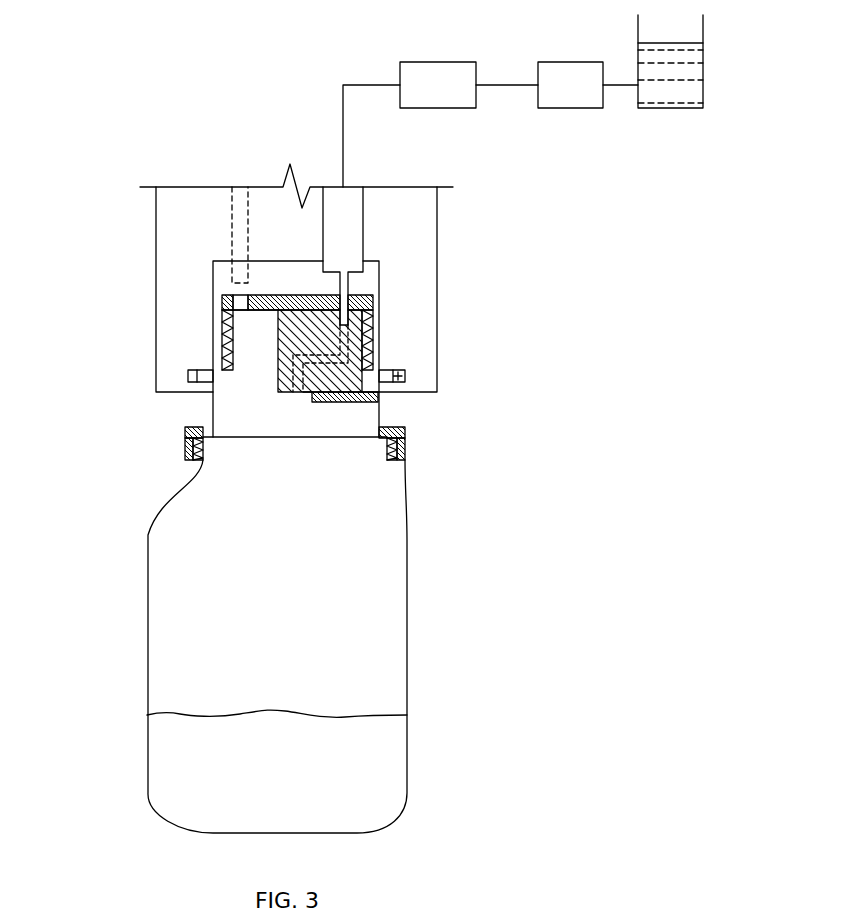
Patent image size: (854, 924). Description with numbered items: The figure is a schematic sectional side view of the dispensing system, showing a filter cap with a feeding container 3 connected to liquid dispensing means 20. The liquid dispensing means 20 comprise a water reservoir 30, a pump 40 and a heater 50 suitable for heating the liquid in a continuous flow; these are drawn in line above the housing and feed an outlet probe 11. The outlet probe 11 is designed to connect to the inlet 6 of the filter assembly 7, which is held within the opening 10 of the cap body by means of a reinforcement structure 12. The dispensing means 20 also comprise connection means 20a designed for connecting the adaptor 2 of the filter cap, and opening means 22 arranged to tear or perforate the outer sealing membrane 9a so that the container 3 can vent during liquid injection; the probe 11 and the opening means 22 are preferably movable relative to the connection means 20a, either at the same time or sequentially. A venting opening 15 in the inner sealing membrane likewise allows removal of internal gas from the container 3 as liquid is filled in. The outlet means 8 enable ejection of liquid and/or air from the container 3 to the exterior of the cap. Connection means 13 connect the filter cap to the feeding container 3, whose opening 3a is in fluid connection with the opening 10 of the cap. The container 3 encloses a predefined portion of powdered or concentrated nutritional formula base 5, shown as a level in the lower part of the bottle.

The adaptor 2 is at (403, 373).
The feeding container 3 is at (407, 617).
The opening 3a is at (267, 438).
The nutritional formula base 5 is at (177, 768).
The inlet 6 is at (345, 338).
The filter assembly 7 is at (323, 385).
The outlet means 8 is at (247, 367).
The outer sealing means 9a is at (372, 302).
The opening 10 is at (233, 423).
The outlet probe 11 is at (345, 290).
The reinforcement structure 12 is at (365, 398).
The connection means 13 is at (405, 443).
The venting opening 15 is at (220, 302).
The liquid dispensing means 20 is at (155, 208).
The connection means 20a is at (190, 373).
The opening means 22 is at (230, 240).
The water reservoir 30 is at (703, 68).
The pump 40 is at (437, 108).
The heater 50 is at (570, 108).